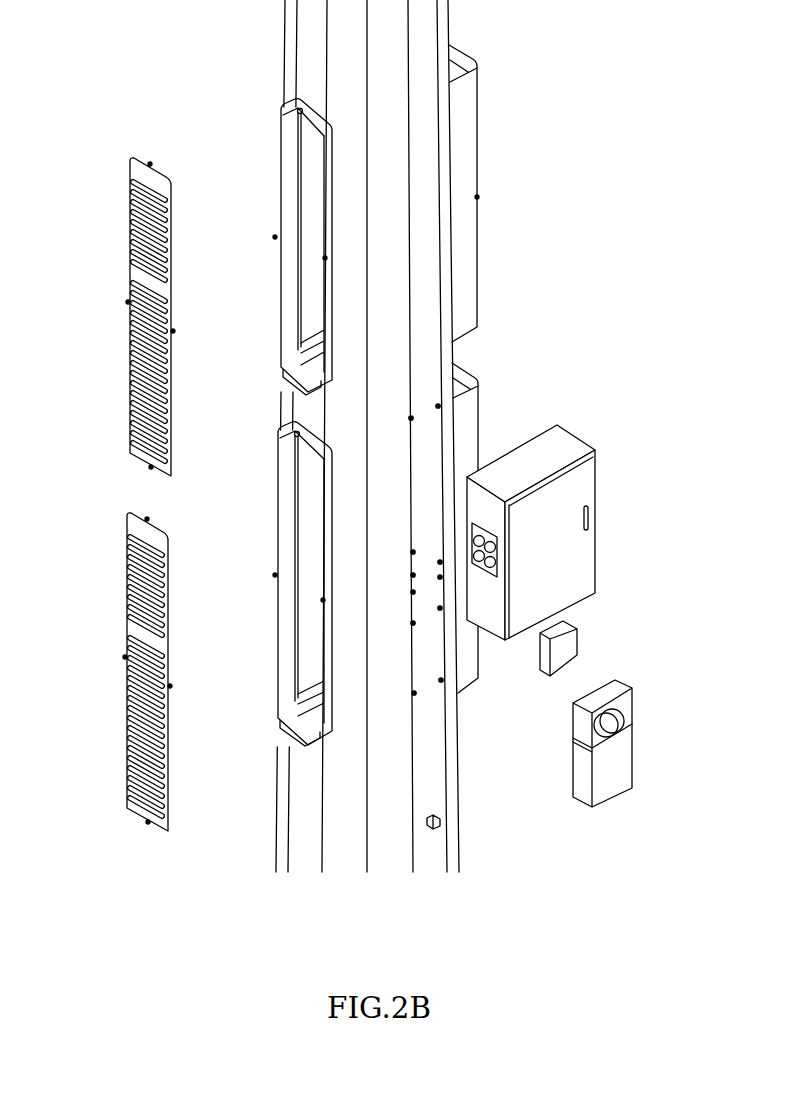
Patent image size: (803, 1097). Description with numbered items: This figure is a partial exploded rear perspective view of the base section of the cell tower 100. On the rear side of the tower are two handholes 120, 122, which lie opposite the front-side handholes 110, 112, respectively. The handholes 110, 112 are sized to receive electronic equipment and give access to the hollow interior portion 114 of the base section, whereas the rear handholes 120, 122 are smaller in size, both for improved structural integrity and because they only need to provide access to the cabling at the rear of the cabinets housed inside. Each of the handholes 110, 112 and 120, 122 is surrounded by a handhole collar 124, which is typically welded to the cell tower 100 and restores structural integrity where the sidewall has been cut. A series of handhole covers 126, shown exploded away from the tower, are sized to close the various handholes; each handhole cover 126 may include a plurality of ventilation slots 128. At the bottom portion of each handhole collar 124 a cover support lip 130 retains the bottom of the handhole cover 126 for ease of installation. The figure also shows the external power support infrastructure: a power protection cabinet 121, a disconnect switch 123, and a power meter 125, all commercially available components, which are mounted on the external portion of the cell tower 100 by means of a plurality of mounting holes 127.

The cell tower 100 is at (160, 48).
The handhole 110 is at (507, 120).
The handhole 112 is at (506, 383).
The hollow interior portion 114 is at (305, 177).
The handhole 120 is at (260, 258).
The power protection cabinet 121 is at (575, 442).
The handhole 122 is at (261, 522).
The disconnect switch 123 is at (578, 622).
The handhole collar 124 is at (281, 104).
The power meter 125 is at (618, 684).
The handhole cover 126 is at (131, 170).
The mounting hole 127 is at (442, 409).
The ventilation slot 128 is at (138, 233).
The cover support lip 130 is at (288, 383).